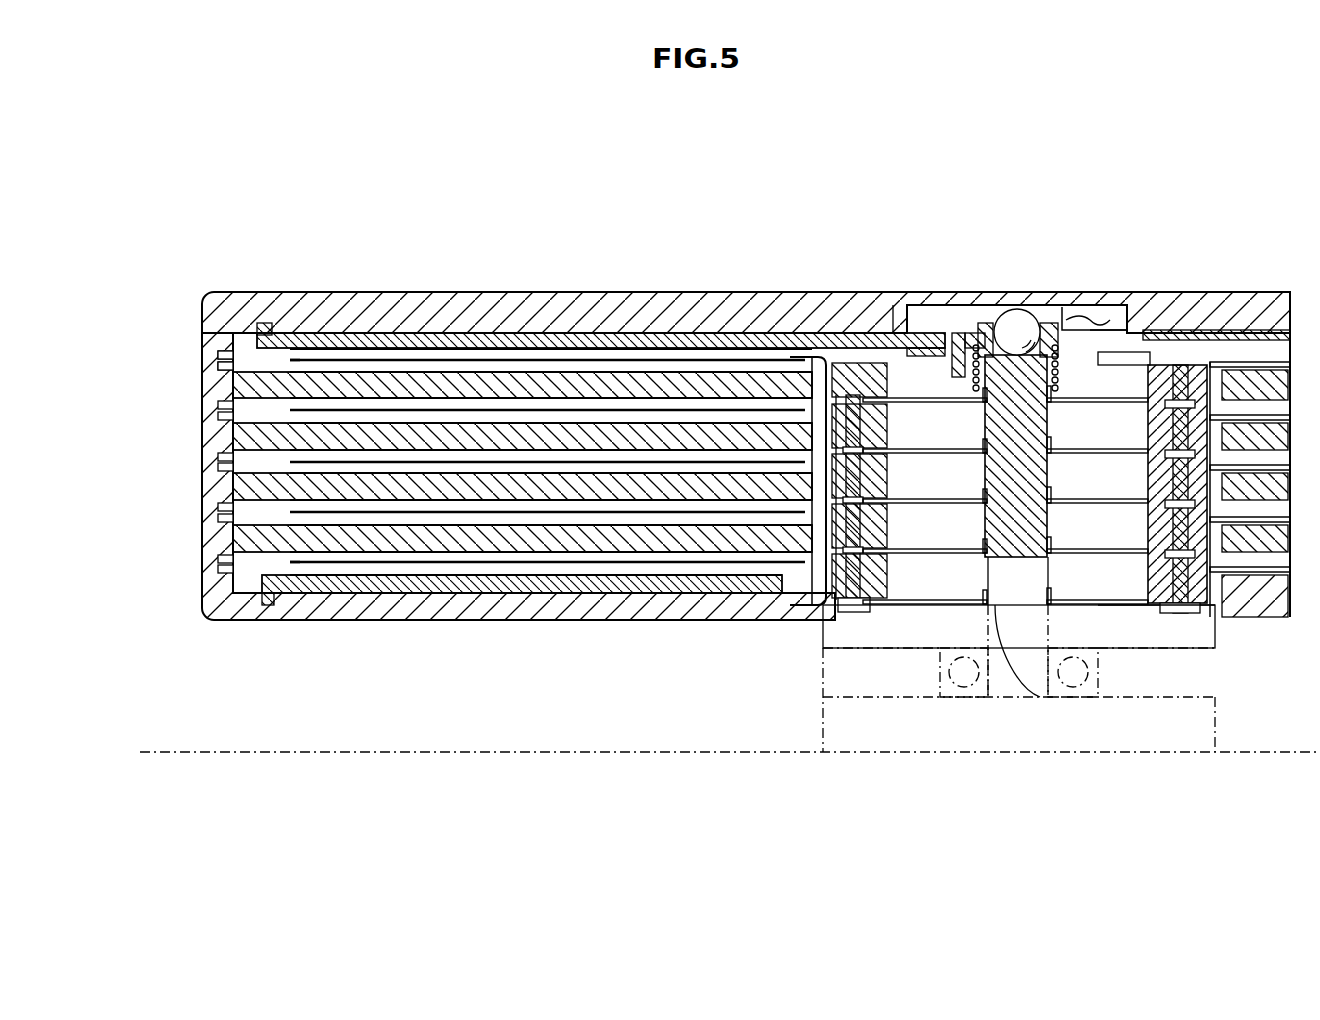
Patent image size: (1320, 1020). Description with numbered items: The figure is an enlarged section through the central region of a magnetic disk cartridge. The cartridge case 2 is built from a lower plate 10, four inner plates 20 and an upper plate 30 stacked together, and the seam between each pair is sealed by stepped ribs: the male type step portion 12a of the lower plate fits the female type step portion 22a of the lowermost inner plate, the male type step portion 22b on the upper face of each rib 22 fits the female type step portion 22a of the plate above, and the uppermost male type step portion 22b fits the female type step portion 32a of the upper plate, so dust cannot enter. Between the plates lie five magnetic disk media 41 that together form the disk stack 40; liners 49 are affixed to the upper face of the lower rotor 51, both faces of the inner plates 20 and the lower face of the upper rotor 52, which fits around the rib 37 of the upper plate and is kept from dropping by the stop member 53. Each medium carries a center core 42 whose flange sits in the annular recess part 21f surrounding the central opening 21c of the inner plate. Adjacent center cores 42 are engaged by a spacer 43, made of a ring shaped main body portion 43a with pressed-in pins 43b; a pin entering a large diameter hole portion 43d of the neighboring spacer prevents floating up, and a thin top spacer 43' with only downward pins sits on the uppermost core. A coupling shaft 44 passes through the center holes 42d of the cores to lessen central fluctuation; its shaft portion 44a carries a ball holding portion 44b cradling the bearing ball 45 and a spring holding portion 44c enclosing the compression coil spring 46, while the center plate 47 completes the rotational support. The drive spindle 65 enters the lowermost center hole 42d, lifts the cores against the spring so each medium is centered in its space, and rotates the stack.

The cartridge case 2 is at (870, 183).
The lower plate 10 is at (728, 624).
The male type step portion 12a is at (212, 582).
The inner plate 20 is at (522, 468).
The central opening 21c is at (973, 656).
The recess part 21f is at (824, 400).
The rib 22 is at (138, 350).
The female type step portion 22a is at (186, 466).
The male type step portion 22b is at (186, 443).
The upper plate 30 is at (725, 290).
The female type step portion 32a is at (212, 333).
The rib 37 is at (893, 333).
The disk stack 40 is at (295, 461).
The magnetic disk medium 41 is at (508, 494).
The center core 42 is at (1168, 464).
The center hole 42d is at (1088, 586).
The spacer 43 is at (925, 496).
The top spacer 43' is at (879, 380).
The main body portion 43a is at (898, 500).
The pin 43b is at (884, 503).
The large diameter hole portion 43d is at (846, 466).
The coupling shaft 44 is at (1044, 323).
The shaft portion 44a is at (1013, 592).
The ball holding portion 44b is at (988, 322).
The spring holding portion 44c is at (955, 333).
The bearing ball 45 is at (1016, 330).
The compression coil spring 46 is at (1070, 320).
The center plate 47 is at (1097, 307).
The liner 49 is at (551, 468).
The lower rotor 51 is at (628, 584).
The upper rotor 52 is at (598, 340).
The stop member 53 is at (1192, 330).
The spindle 65 is at (1258, 690).